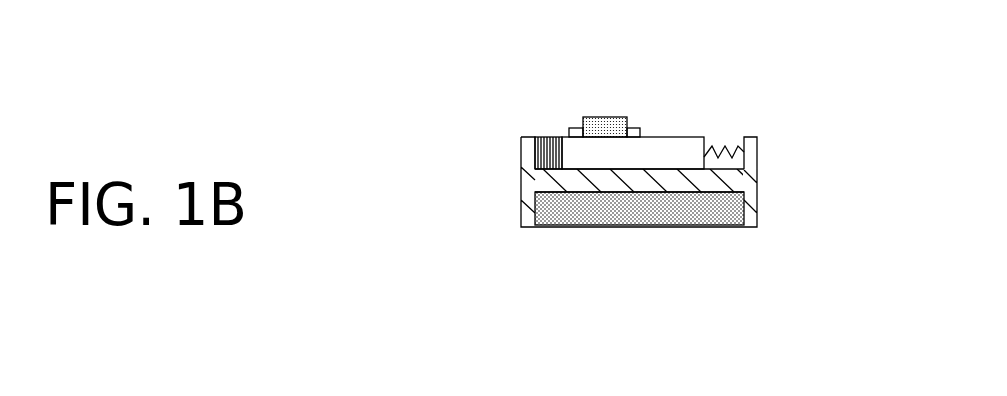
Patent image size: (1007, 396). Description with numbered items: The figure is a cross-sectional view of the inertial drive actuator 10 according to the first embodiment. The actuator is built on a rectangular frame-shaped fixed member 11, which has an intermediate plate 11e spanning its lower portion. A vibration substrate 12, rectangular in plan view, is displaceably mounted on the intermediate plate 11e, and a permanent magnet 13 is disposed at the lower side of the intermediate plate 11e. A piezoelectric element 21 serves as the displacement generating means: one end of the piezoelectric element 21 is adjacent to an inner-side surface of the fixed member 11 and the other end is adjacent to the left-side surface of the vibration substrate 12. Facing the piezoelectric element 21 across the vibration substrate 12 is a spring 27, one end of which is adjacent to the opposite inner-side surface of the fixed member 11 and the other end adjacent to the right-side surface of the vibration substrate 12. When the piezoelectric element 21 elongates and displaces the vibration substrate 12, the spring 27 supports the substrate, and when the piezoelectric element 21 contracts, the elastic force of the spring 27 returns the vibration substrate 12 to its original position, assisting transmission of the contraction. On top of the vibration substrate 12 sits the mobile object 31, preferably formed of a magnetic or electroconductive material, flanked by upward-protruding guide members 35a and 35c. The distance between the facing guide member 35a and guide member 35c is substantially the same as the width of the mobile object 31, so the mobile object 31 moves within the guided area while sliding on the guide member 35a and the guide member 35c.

The inertial drive actuator 10 is at (653, 372).
The fixed member 11 is at (533, 183).
The intermediate plate 11e is at (599, 183).
The vibration substrate 12 is at (682, 143).
The permanent magnet 13 is at (693, 207).
The piezoelectric element 21 is at (548, 151).
The spring 27 is at (742, 148).
The mobile object 31 is at (596, 117).
The guide member 35a is at (568, 130).
The guide member 35c is at (635, 127).